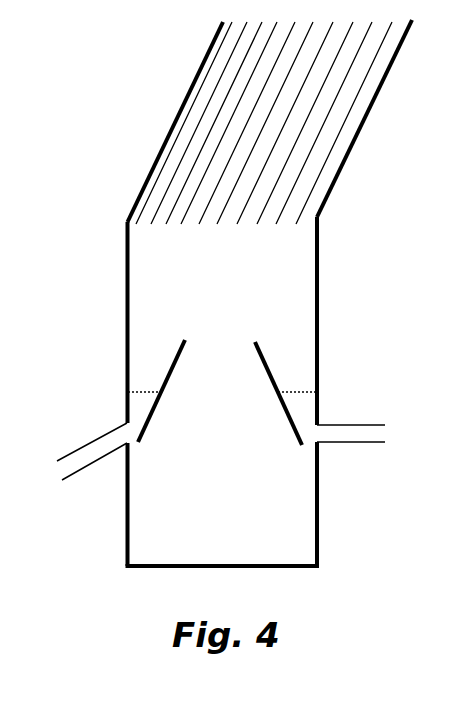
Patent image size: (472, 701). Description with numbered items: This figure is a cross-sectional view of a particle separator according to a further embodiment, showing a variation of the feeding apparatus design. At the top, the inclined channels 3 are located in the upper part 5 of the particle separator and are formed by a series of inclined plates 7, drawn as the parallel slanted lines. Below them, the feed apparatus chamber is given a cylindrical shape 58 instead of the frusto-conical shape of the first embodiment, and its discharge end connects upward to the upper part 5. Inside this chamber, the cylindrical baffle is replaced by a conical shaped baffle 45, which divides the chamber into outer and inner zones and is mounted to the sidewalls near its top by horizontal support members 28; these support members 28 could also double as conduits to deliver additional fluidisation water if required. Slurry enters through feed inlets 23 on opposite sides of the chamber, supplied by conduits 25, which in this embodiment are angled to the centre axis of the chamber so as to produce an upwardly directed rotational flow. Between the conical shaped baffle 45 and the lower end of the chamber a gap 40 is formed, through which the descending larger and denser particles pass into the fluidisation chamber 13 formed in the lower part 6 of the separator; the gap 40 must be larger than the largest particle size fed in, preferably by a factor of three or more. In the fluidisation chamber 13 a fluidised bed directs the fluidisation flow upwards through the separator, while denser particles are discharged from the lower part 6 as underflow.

The inclined channels 3 is at (260, 152).
The upper part 5 is at (325, 212).
The inclined plates 7 is at (187, 185).
The cylindrical shape 58 is at (320, 320).
The lower part 6 is at (125, 519).
The fluidisation chamber 13 is at (298, 534).
The conical shaped baffle 45 is at (168, 362).
The gap 40 is at (310, 445).
The support members 28 is at (128, 389).
The conduits 25 is at (75, 447).
The feed inlets 23 is at (318, 435).